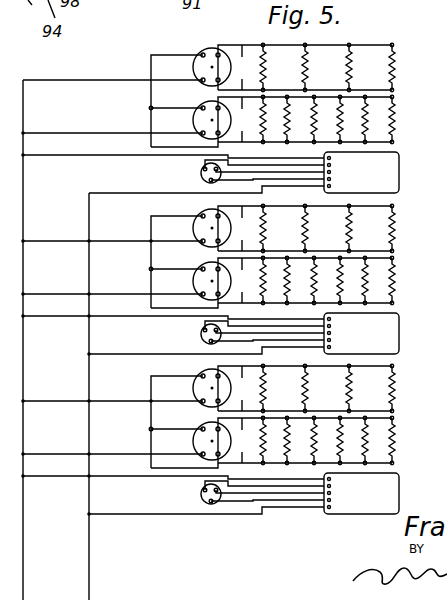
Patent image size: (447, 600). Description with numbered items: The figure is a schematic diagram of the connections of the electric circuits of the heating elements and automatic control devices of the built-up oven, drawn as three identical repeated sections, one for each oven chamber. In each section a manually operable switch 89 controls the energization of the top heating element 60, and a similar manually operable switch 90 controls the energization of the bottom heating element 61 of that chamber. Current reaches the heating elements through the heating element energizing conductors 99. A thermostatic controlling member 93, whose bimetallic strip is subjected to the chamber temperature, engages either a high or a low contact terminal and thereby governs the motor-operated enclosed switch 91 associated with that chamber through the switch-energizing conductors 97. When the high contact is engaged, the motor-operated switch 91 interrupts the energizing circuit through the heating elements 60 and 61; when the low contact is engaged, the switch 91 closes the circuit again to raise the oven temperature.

The top heating element 60 is at (398, 53).
The bottom heating element 61 is at (398, 106).
The manually operable switch 89 is at (193, 67).
The manually operable switch 90 is at (193, 120).
The motor-operated enclosed switch 91 is at (386, 166).
The thermostatic controlling member 93 is at (201, 174).
The switch-energizing conductors 97 is at (268, 187).
The heating element energizing conductors 99 is at (241, 254).